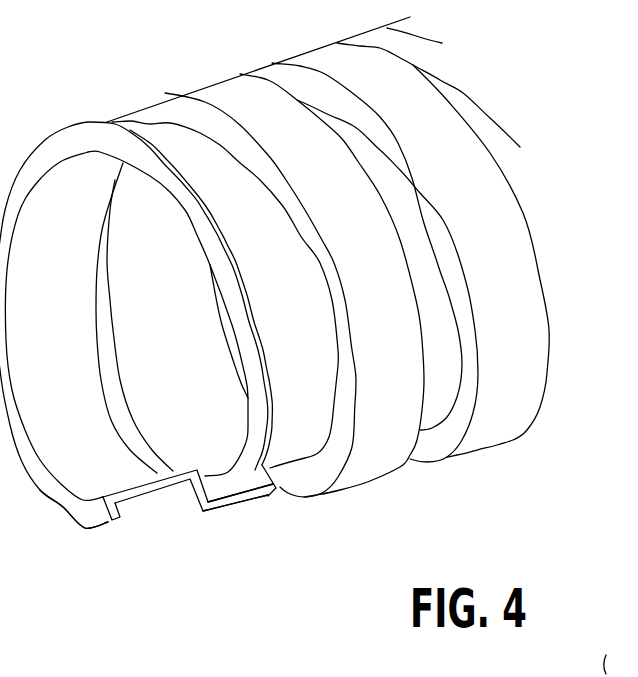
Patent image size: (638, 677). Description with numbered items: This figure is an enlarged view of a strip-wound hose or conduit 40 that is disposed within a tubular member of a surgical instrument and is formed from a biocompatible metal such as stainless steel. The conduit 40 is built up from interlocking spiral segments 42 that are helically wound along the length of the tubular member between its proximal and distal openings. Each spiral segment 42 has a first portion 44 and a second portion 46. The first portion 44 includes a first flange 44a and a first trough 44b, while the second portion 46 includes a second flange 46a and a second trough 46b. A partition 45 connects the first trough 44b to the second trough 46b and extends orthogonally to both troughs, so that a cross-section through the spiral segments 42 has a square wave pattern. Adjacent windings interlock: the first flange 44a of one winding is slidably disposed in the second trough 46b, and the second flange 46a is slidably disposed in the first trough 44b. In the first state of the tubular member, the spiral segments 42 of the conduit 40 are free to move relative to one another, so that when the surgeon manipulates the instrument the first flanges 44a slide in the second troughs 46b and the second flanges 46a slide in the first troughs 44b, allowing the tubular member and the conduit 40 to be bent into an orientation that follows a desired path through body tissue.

The conduit 40 is at (196, 64).
The spiral segment 42 is at (500, 417).
The first portion 44 is at (96, 576).
The first flange 44a is at (63, 508).
The first trough 44b is at (143, 503).
The partition 45 is at (183, 507).
The second portion 46 is at (271, 550).
The second flange 46a is at (277, 490).
The second trough 46b is at (238, 531).